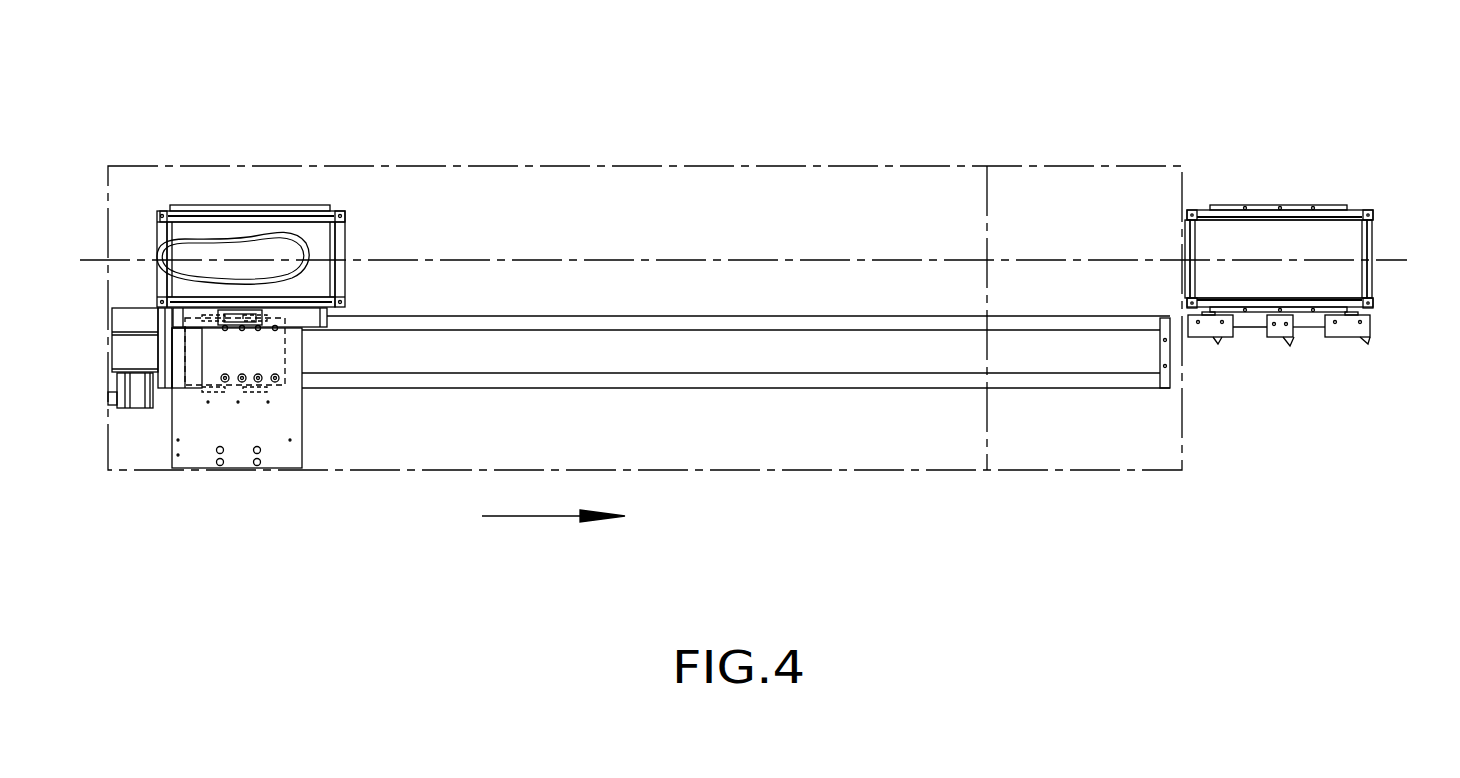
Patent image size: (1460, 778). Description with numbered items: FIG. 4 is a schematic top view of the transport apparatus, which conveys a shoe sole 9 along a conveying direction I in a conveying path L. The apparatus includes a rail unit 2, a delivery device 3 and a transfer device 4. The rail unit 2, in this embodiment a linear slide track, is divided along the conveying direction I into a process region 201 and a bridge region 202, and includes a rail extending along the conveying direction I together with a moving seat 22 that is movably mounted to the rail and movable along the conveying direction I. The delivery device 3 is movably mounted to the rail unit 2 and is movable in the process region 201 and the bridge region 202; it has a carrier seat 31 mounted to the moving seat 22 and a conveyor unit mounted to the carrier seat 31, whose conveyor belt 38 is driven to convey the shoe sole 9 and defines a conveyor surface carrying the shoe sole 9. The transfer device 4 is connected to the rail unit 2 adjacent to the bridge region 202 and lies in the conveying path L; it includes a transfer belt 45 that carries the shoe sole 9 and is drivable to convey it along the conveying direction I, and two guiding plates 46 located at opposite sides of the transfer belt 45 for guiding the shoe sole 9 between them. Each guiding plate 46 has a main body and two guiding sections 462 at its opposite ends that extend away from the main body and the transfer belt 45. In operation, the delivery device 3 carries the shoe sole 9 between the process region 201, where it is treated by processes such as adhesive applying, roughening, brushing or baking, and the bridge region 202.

The rail unit 2 is at (850, 390).
The process region 201 is at (645, 165).
The bridge region 202 is at (1058, 165).
The moving seat 22 is at (275, 345).
The delivery device 3 is at (305, 198).
The carrier seat 31 is at (235, 440).
The conveyor belt 38 is at (207, 232).
The shoe sole 9 is at (260, 232).
The transfer device 4 is at (1369, 192).
The transfer belt 45 is at (1267, 238).
The guiding plates 46 is at (1302, 206).
The guiding sections 462 is at (1182, 227).
The conveying path L is at (755, 257).
The conveying direction I is at (561, 514).